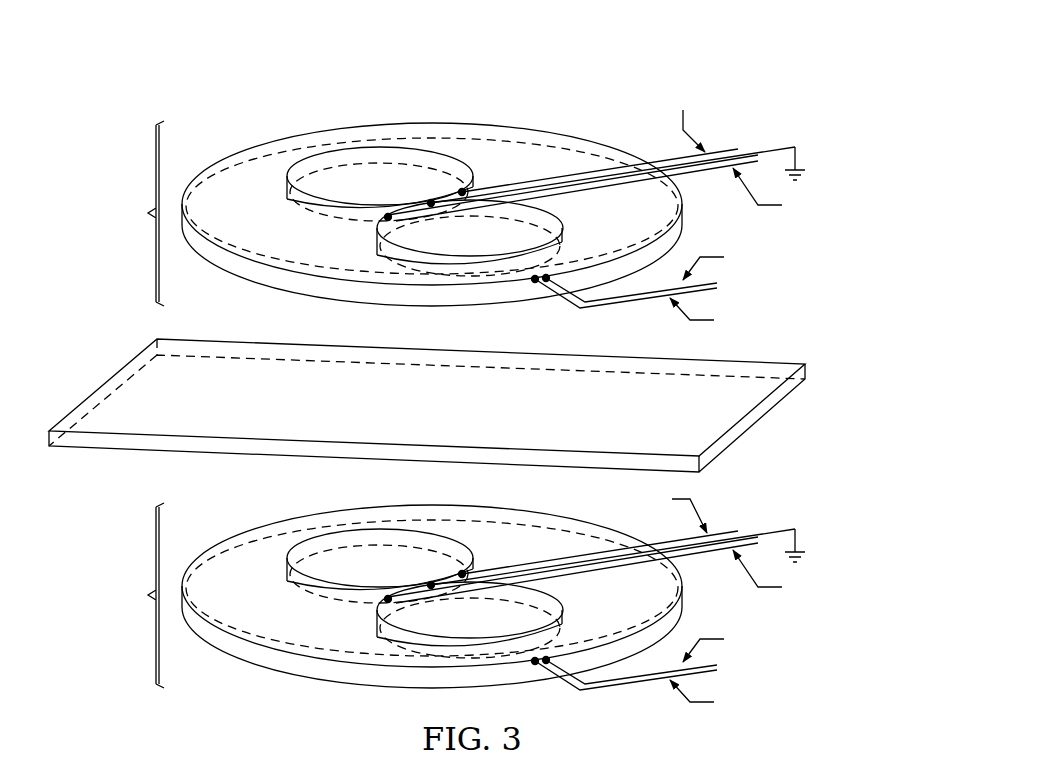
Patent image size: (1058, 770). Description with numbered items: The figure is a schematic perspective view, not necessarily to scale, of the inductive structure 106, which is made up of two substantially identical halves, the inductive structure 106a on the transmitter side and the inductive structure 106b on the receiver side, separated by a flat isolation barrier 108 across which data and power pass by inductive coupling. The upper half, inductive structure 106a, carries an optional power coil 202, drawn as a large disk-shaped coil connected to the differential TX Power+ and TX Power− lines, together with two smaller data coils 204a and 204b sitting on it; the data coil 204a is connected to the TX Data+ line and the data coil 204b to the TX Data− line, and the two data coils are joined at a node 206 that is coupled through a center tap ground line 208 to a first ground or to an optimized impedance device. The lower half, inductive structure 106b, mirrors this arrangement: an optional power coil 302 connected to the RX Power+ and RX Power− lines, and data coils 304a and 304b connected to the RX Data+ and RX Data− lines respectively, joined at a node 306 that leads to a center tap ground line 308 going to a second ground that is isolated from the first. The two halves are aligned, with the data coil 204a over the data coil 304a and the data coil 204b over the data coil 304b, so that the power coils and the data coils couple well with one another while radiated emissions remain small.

The inductive structure 106 is at (378, 72).
The inductive structure 106a is at (128, 213).
The inductive structure 106b is at (128, 595).
The isolation barrier 108 is at (753, 418).
The power coil 202 is at (265, 143).
The data coil 204a is at (318, 199).
The data coil 204b is at (556, 217).
The node 206 is at (430, 203).
The center tap ground line 208 is at (780, 147).
The power coil 302 is at (265, 525).
The data coil 304a is at (318, 581).
The data coil 304b is at (556, 599).
The node 306 is at (430, 585).
The center tap ground line 308 is at (780, 530).